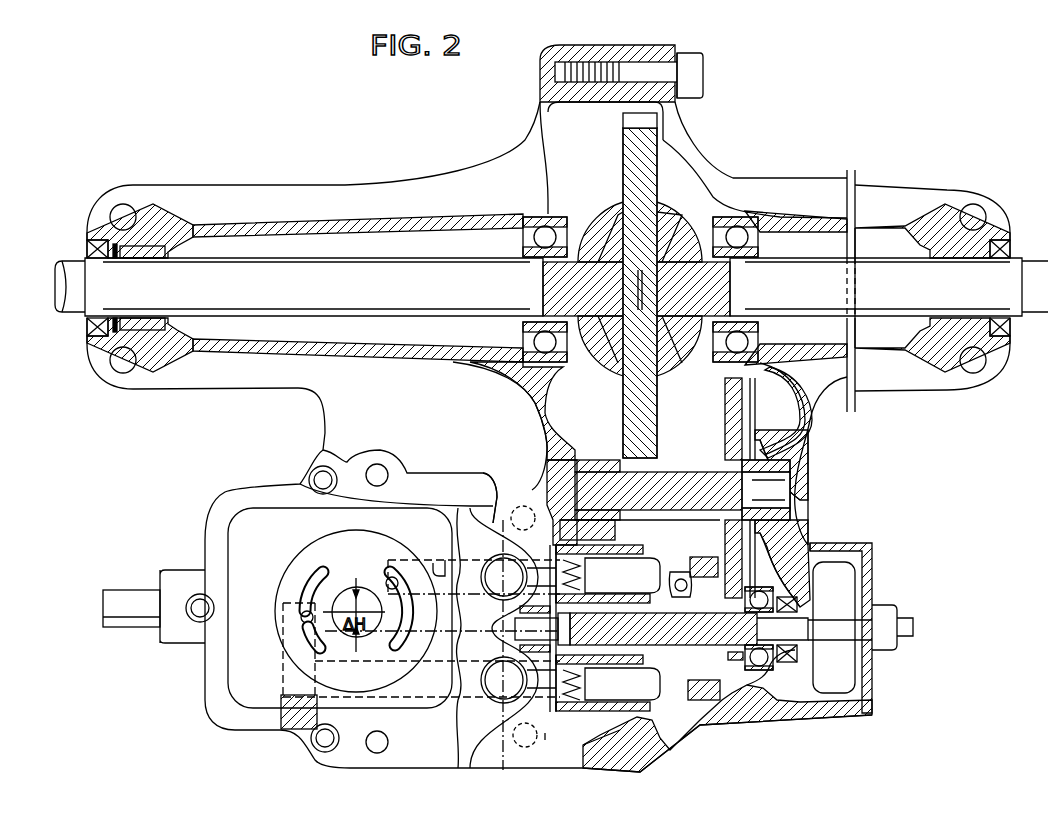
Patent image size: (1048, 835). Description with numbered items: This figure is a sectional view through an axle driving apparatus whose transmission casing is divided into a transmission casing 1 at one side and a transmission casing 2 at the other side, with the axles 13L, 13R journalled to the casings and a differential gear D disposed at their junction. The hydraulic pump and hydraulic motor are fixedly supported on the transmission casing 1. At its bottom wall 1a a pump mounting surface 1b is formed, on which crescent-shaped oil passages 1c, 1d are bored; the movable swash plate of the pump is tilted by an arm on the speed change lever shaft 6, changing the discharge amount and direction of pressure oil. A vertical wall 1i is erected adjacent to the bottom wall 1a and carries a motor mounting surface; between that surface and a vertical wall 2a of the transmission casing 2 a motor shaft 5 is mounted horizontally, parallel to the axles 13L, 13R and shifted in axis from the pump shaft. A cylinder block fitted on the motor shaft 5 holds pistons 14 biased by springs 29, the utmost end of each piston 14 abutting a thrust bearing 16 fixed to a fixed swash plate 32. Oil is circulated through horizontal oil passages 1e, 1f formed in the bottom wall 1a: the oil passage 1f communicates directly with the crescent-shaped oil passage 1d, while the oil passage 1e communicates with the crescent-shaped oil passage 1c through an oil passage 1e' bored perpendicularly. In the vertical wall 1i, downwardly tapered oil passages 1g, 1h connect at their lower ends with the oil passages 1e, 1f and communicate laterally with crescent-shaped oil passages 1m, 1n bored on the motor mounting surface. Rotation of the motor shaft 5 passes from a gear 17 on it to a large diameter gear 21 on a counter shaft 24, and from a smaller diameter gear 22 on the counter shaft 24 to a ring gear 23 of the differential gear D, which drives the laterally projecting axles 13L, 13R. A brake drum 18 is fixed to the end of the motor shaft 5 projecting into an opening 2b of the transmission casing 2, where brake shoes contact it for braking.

The transmission casing at one side 1 is at (340, 184).
The transmission casing at the other side 2 is at (918, 188).
The vertical wall 2a is at (777, 670).
The opening 2b is at (813, 557).
The motor shaft 5 is at (714, 628).
The speed change lever shaft 6 is at (131, 597).
The axle 13L is at (372, 309).
The axle 13R is at (938, 309).
The piston 14 is at (636, 588).
The thrust bearing 16 is at (681, 570).
The gear 17 is at (730, 656).
The brake drum 18 is at (847, 583).
The large diameter gear 21 is at (745, 430).
The smaller diameter gear 22 is at (683, 460).
The ring gear 23 is at (658, 430).
The counter shaft 24 is at (800, 487).
The spring 29 is at (568, 705).
The fixed swash plate 32 is at (717, 700).
The differential gear D is at (586, 160).
The bottom wall 1a is at (263, 617).
The pump mounting surface 1b is at (293, 577).
The crescent-shaped oil passage 1c is at (302, 622).
The crescent-shaped oil passage 1d is at (390, 583).
The horizontal oil passage 1e is at (421, 683).
The oil passage 1e' is at (271, 734).
The horizontal oil passage 1f is at (434, 566).
The oil passage 1g is at (507, 695).
The oil passage 1h is at (497, 497).
The vertical wall 1i is at (532, 493).
The crescent-shaped oil passage 1m is at (543, 740).
The crescent-shaped oil passage 1n is at (534, 509).